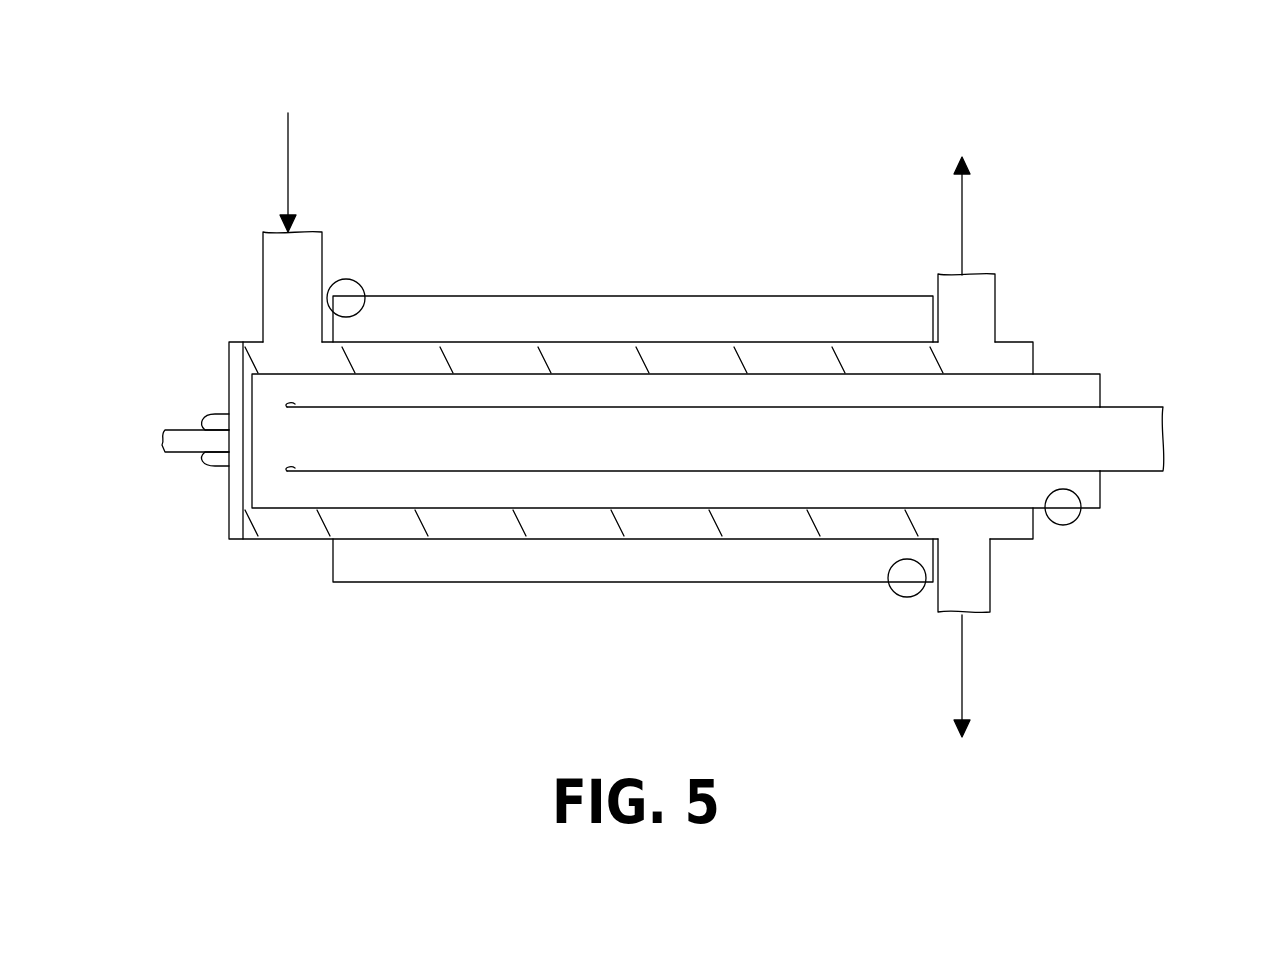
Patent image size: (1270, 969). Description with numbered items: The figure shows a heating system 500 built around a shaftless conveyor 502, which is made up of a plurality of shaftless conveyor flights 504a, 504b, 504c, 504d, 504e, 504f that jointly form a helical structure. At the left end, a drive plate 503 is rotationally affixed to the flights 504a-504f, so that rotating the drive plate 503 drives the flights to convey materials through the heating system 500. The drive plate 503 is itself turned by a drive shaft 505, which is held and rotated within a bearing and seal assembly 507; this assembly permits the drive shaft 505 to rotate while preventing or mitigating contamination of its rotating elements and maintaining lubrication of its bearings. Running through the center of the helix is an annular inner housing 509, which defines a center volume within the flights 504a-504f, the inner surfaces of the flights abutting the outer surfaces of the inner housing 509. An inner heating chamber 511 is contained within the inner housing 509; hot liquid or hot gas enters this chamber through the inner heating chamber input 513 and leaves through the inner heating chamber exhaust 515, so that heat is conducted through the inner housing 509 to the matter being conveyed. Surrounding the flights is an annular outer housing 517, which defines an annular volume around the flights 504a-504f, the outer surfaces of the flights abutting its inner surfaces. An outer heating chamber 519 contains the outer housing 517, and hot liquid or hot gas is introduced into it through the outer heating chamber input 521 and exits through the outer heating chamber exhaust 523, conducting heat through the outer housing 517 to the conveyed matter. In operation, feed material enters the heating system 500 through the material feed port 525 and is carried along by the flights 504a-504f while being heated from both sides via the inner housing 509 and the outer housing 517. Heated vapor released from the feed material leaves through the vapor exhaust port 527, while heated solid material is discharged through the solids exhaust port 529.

The heating system 500 is at (728, 128).
The shaftless conveyor 502 is at (572, 364).
The drive plate 503 is at (242, 368).
The shaftless conveyor flight 504a is at (450, 373).
The shaftless conveyor flight 504b is at (418, 530).
The shaftless conveyor flight 504c is at (640, 347).
The shaftless conveyor flight 504d is at (615, 532).
The shaftless conveyor flight 504e is at (840, 347).
The shaftless conveyor flight 504f is at (810, 522).
The drive shaft 505 is at (220, 443).
The bearing and seal assembly 507 is at (207, 417).
The inner housing 509 is at (307, 508).
The inner heating chamber 511 is at (472, 468).
The inner heating chamber input 513 is at (1063, 510).
The inner heating chamber exhaust 515 is at (1148, 458).
The outer housing 517 is at (688, 540).
The outer heating chamber 519 is at (748, 295).
The outer heating chamber input 521 is at (902, 583).
The outer heating chamber exhaust 523 is at (346, 298).
The material feed port 525 is at (287, 185).
The vapor exhaust port 527 is at (962, 230).
The solids exhaust port 529 is at (962, 685).